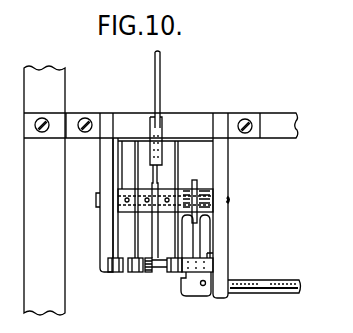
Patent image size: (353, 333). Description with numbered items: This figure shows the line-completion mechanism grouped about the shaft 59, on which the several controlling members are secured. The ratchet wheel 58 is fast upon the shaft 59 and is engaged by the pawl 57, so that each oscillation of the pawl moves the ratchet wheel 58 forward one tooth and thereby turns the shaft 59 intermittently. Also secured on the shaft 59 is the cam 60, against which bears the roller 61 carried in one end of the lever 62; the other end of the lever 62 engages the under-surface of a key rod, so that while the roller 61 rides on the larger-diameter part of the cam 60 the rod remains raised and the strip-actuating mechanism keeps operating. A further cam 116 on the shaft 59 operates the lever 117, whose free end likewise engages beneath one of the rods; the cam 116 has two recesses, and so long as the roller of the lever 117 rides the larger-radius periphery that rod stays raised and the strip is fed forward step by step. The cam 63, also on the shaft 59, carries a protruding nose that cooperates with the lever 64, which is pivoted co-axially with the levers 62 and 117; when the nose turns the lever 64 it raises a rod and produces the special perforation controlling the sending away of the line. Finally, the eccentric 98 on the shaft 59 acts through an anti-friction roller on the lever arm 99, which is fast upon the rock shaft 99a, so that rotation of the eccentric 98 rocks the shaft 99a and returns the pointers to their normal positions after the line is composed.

The pawl 57 is at (161, 75).
The ratchet wheel 58 is at (150, 222).
The shaft 59 is at (229, 200).
The cam 60 is at (142, 165).
The roller 61 is at (138, 272).
The lever 62 is at (148, 273).
The cam 63 is at (179, 158).
The lever 64 is at (173, 273).
The eccentric 98 is at (197, 182).
The lever arm 99 is at (195, 240).
The rock shaft 99a is at (262, 293).
The cam 116 is at (117, 150).
The lever 117 is at (118, 272).